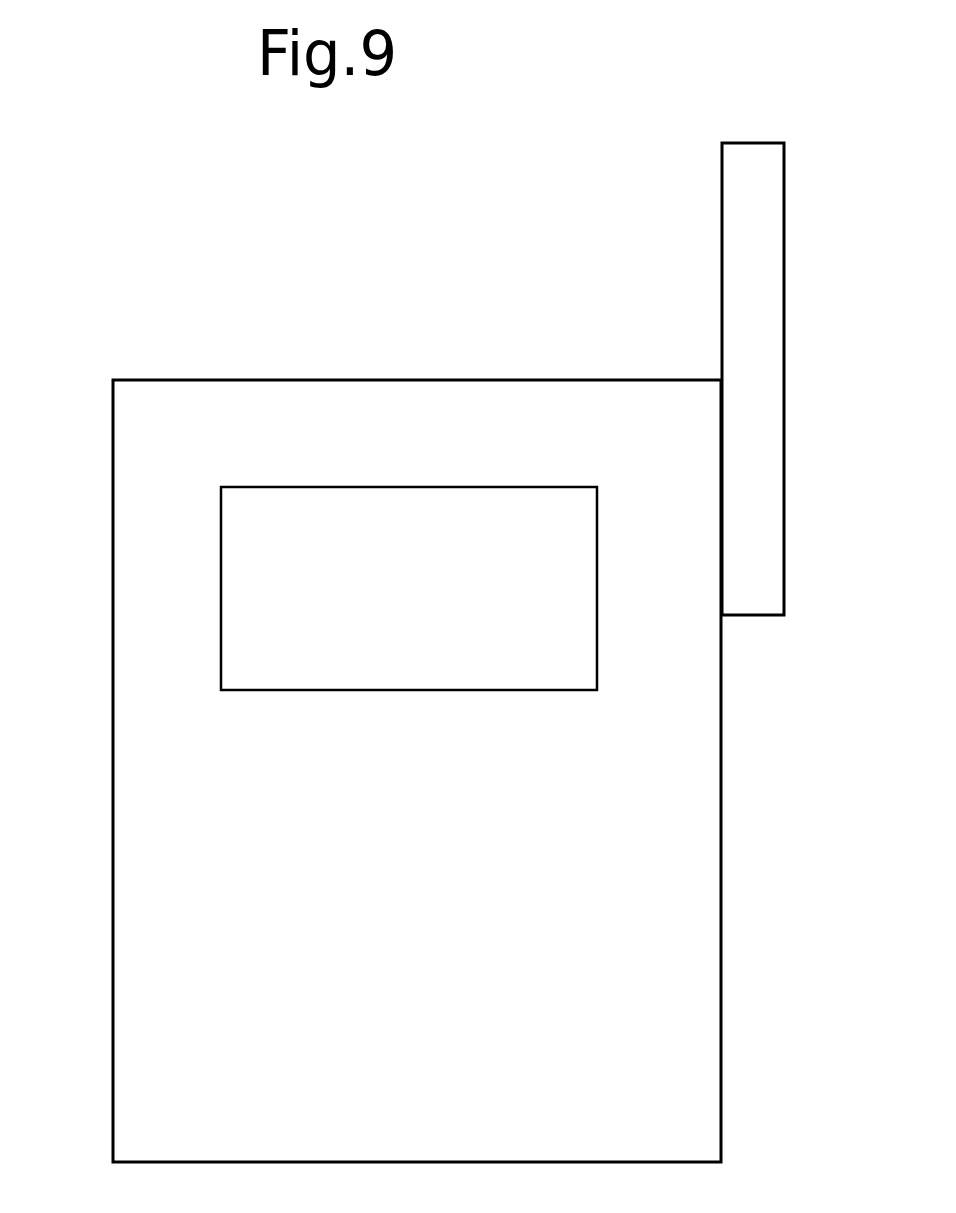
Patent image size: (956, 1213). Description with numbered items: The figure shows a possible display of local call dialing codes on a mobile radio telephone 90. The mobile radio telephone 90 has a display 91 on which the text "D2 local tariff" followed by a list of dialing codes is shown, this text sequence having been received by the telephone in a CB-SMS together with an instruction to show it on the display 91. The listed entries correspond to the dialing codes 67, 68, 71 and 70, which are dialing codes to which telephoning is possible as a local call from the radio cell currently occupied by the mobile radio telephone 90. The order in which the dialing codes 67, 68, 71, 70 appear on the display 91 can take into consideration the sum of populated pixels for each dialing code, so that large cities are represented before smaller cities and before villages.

The mobile radio telephone 90 is at (724, 887).
The display 91 is at (393, 485).
The dialing code VW3 67 is at (261, 546).
The dialing code VW4 68 is at (259, 586).
The dialing code VW7 71 is at (261, 632).
The dialing code VW6 70 is at (261, 670).